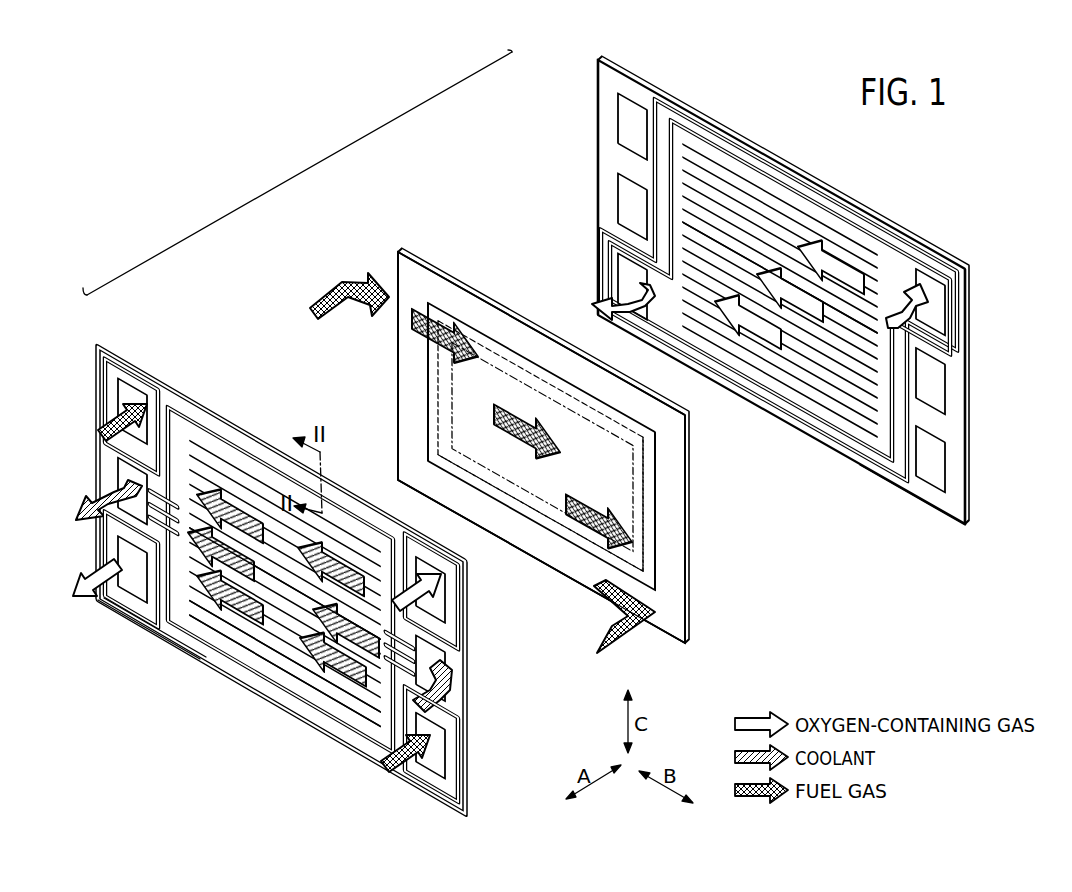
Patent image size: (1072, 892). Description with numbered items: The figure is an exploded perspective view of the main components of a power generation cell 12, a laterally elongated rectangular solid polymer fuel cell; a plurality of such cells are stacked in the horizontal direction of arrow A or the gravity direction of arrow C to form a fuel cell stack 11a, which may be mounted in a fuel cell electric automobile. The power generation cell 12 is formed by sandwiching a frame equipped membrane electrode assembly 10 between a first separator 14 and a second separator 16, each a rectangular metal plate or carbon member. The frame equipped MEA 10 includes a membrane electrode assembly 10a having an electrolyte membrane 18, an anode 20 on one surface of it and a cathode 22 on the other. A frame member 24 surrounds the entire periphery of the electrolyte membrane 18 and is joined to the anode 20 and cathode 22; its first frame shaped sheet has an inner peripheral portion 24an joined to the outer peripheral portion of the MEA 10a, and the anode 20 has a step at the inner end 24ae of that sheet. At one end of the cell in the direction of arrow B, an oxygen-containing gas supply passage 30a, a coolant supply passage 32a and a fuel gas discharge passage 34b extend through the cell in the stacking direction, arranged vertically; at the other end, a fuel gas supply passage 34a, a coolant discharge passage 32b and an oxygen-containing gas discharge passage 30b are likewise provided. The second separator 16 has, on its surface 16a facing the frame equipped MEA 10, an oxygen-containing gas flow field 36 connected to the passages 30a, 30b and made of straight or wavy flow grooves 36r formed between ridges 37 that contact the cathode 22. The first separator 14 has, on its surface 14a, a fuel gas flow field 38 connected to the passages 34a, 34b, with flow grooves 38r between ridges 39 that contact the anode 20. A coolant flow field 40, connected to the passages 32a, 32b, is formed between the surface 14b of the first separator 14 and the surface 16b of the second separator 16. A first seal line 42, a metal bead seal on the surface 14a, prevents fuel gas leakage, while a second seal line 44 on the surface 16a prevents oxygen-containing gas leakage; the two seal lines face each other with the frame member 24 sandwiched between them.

The frame equipped membrane electrode assembly 10 is at (396, 243).
The membrane electrode assembly 10a is at (520, 512).
The fuel cell stack 11a is at (968, 156).
The power generation cell 12 is at (301, 171).
The first separator 14 is at (115, 346).
The surface of the first separator 14a is at (112, 615).
The surface of the first separator 14b is at (139, 628).
The second separator 16 is at (593, 70).
The surface of the second separator 16a is at (930, 492).
The surface of the second separator 16b is at (943, 515).
The electrolyte membrane 18 is at (610, 497).
The anode 20 is at (437, 418).
The cathode 22 is at (647, 535).
The frame member 24 is at (448, 266).
The inner peripheral portion 24an is at (510, 367).
The inner end 24ae is at (450, 415).
The oxygen-containing gas supply passage 30a is at (437, 600).
The oxygen-containing gas discharge passage 30b is at (128, 556).
The coolant supply passage 32a is at (440, 652).
The coolant discharge passage 32b is at (128, 478).
The fuel gas supply passage 34a is at (128, 410).
The fuel gas discharge passage 34b is at (440, 735).
The oxygen-containing gas flow field 36 is at (746, 190).
The flow grooves 36r is at (798, 222).
The ridges 37 is at (800, 383).
The fuel gas flow field 38 is at (245, 462).
The flow grooves 38r is at (347, 540).
The ridges 39 is at (292, 672).
The coolant flow field 40 is at (222, 632).
The first seal line 42 is at (196, 404).
The second seal line 44 is at (618, 236).